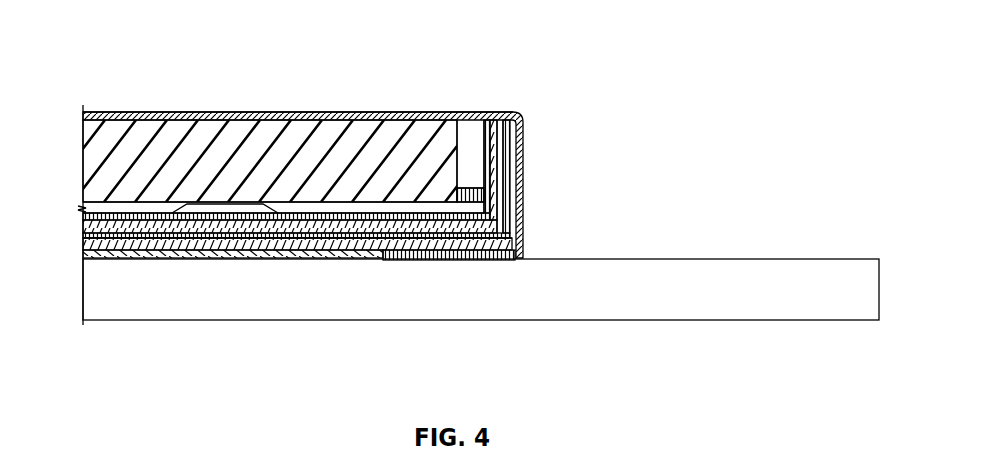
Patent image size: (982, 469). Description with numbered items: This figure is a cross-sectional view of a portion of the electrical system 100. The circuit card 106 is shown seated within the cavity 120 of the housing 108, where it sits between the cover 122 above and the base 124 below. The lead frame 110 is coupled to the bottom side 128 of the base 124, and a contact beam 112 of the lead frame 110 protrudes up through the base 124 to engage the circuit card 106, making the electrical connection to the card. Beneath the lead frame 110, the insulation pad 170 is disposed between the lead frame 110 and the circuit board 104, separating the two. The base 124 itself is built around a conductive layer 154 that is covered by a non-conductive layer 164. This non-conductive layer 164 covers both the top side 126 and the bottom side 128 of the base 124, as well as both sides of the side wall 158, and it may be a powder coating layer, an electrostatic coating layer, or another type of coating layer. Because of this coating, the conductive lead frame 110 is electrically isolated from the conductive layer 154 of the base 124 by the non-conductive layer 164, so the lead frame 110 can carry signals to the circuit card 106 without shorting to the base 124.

The electrical system 100 is at (520, 50).
The circuit board 104 is at (663, 275).
The circuit card 106 is at (228, 158).
The housing 108 is at (472, 107).
The lead frame 110 is at (193, 243).
The contact beam 112 is at (193, 213).
The cavity 120 is at (460, 208).
The cover 122 is at (231, 114).
The base 124 is at (297, 213).
The top side 126 is at (367, 213).
The bottom side 128 is at (477, 236).
The conductive layer 154 is at (118, 227).
The side wall 158 is at (499, 175).
The non-conductive layer 164 is at (145, 222).
The insulation pad 170 is at (262, 252).